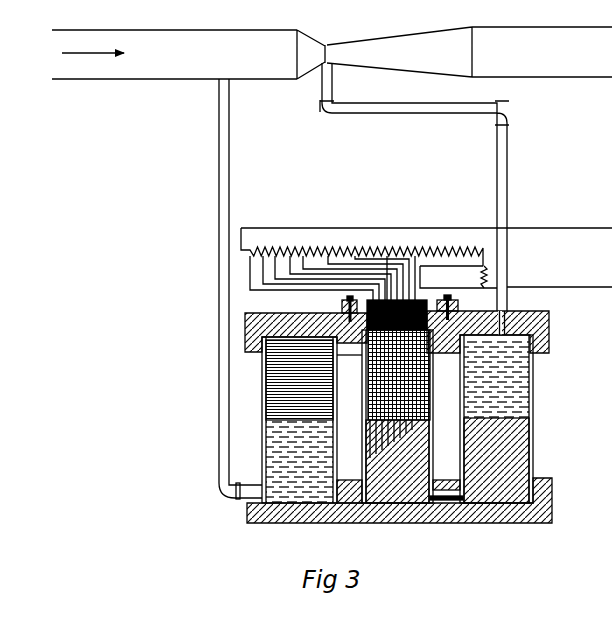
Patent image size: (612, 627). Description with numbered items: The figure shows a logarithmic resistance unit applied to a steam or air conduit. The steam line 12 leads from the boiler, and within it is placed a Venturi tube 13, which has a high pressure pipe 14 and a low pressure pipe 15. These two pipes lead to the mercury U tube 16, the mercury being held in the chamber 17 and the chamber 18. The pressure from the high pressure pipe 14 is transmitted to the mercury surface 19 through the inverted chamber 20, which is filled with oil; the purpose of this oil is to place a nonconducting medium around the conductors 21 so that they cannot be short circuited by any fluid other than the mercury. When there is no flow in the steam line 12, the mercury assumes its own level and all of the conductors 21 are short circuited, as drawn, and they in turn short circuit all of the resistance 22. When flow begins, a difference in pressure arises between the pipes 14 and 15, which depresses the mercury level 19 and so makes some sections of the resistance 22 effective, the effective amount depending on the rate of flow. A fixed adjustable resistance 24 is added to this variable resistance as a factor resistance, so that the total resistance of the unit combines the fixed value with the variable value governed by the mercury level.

The steam line 12 is at (203, 25).
The Venturi tube 13 is at (340, 33).
The high pressure pipe 14 is at (219, 134).
The low pressure pipe 15 is at (507, 148).
The mercury U tube 16 is at (433, 444).
The chamber 17 is at (397, 461).
The chamber 18 is at (496, 460).
The mercury surface 19 is at (380, 413).
The inverted chamber 20 is at (299, 380).
The conductors 21 is at (429, 379).
The resistance 22 is at (359, 245).
The fixed adjustable resistance 24 is at (481, 277).